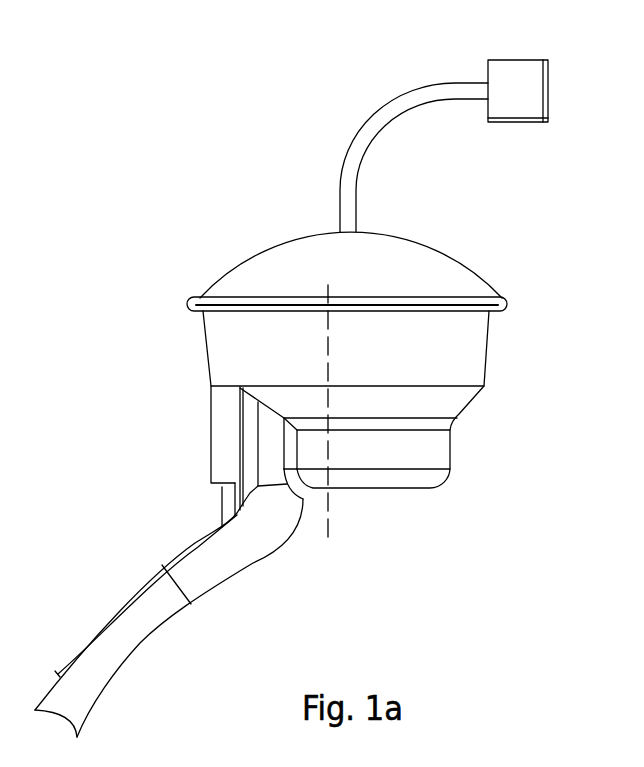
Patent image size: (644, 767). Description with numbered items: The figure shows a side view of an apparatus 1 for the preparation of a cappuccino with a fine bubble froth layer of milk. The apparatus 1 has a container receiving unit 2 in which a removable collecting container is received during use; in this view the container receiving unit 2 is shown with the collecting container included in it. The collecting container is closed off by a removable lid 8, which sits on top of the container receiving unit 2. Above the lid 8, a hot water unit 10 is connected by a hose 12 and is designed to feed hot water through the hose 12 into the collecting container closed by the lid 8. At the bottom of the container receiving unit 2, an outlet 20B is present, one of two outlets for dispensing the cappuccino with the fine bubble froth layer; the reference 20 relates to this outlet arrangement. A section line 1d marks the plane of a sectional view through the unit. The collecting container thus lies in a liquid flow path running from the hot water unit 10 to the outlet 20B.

The apparatus for the preparation of a cappuccino 1 is at (490, 557).
The section line 1d is at (328, 285).
The container receiving unit 2 is at (502, 353).
The removable lid 8 is at (441, 253).
The hot water unit 10 is at (533, 101).
The hose 12 is at (403, 94).
The support member 20 is at (427, 456).
The outlet 20B is at (269, 525).